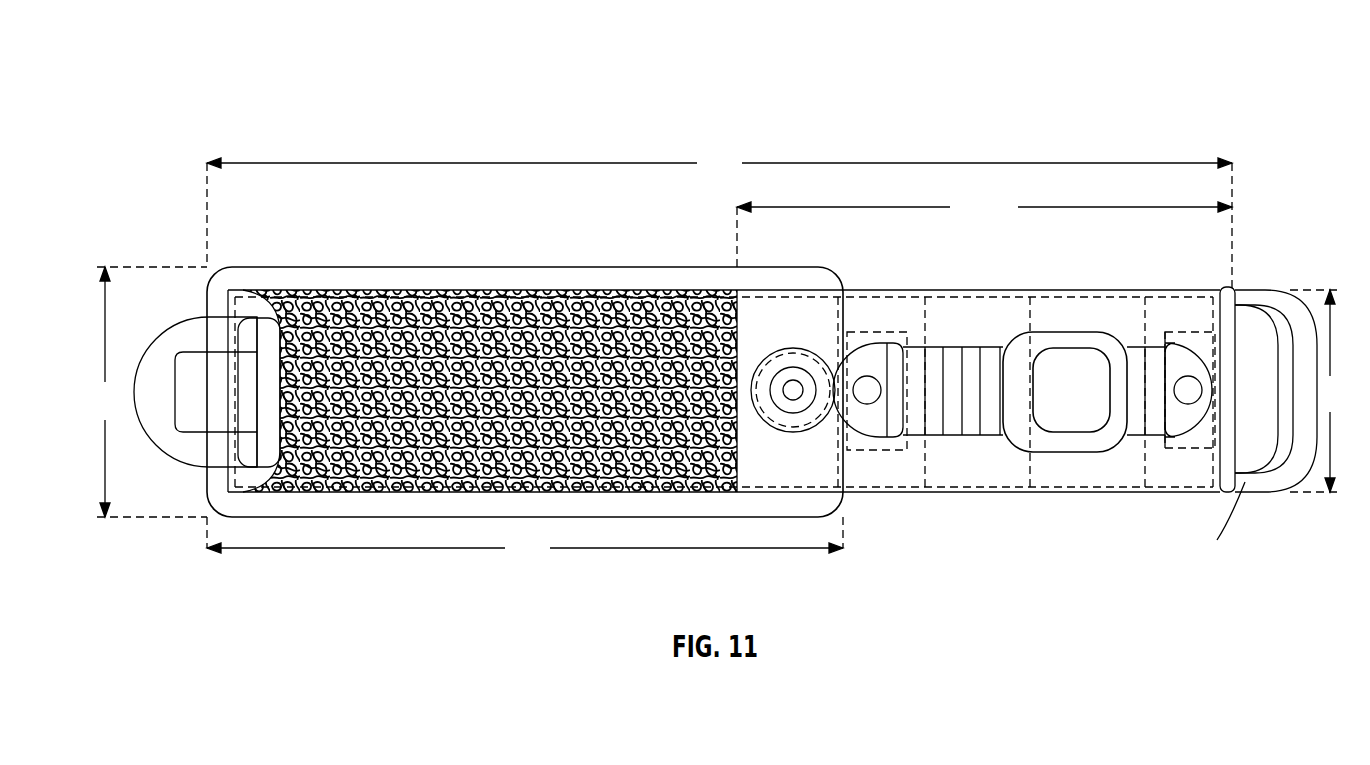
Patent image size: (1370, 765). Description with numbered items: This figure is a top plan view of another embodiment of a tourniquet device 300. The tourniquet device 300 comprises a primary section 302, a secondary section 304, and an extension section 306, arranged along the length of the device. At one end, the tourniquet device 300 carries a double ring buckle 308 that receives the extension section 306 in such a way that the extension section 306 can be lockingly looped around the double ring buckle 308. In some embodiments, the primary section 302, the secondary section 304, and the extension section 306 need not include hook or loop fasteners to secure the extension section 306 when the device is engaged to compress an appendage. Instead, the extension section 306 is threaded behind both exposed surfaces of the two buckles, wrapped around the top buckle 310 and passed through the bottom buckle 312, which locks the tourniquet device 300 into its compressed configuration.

The tourniquet device 300 is at (715, 331).
The primary section 302 is at (840, 148).
The secondary section 304 is at (770, 258).
The extension section 306 is at (272, 330).
The double ring buckle 308 is at (1247, 387).
The top buckle 310 is at (1287, 478).
The bottom buckle 312 is at (1275, 310).